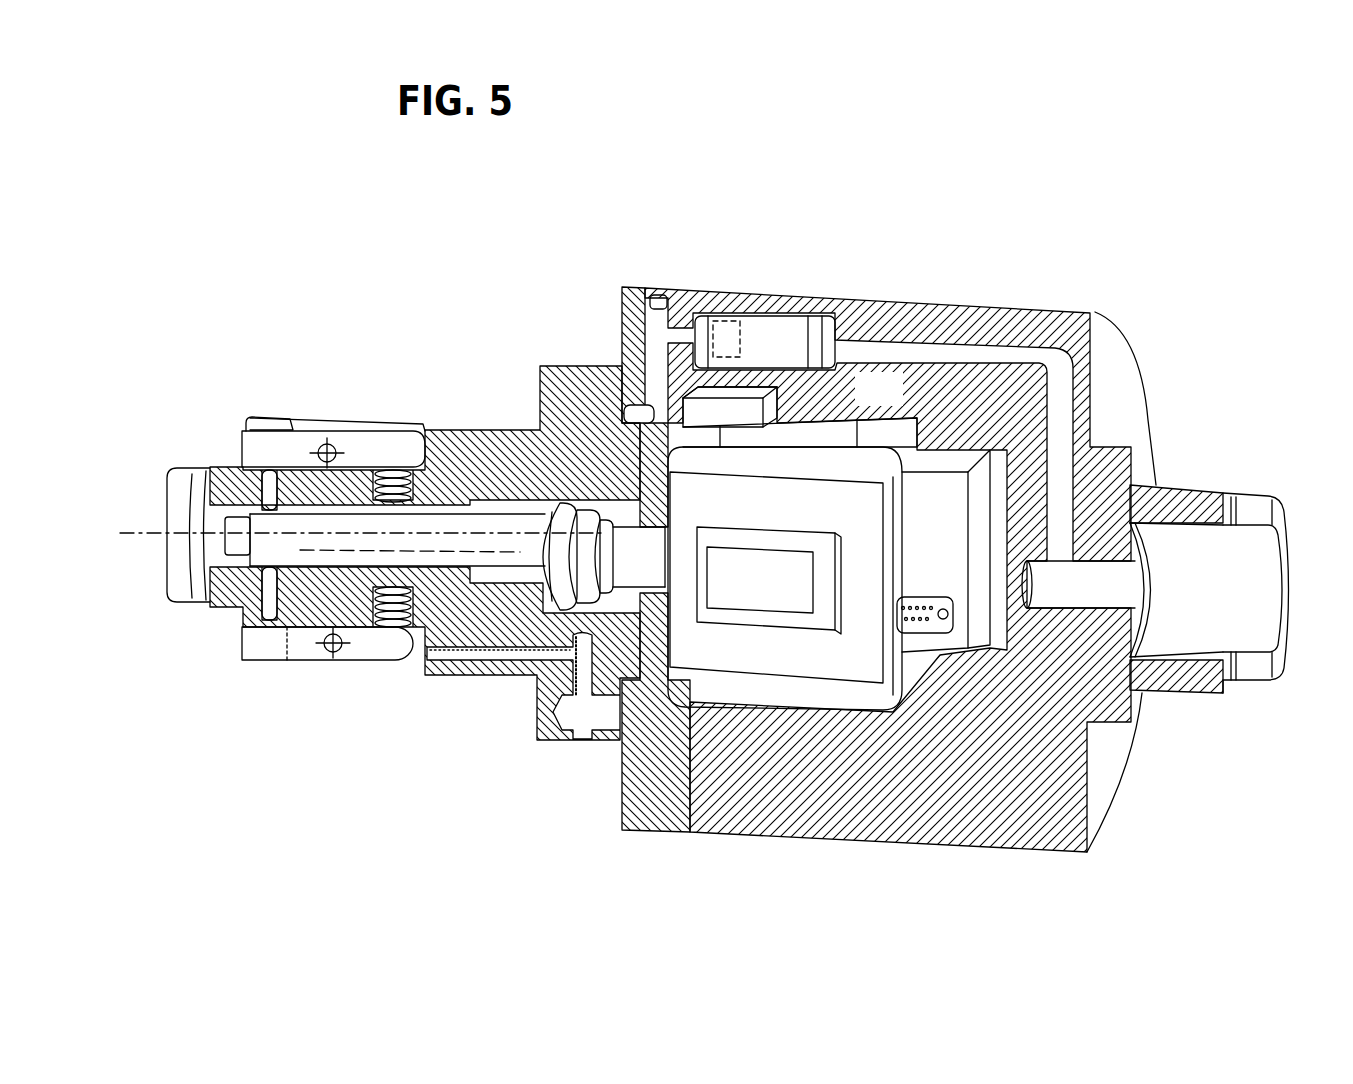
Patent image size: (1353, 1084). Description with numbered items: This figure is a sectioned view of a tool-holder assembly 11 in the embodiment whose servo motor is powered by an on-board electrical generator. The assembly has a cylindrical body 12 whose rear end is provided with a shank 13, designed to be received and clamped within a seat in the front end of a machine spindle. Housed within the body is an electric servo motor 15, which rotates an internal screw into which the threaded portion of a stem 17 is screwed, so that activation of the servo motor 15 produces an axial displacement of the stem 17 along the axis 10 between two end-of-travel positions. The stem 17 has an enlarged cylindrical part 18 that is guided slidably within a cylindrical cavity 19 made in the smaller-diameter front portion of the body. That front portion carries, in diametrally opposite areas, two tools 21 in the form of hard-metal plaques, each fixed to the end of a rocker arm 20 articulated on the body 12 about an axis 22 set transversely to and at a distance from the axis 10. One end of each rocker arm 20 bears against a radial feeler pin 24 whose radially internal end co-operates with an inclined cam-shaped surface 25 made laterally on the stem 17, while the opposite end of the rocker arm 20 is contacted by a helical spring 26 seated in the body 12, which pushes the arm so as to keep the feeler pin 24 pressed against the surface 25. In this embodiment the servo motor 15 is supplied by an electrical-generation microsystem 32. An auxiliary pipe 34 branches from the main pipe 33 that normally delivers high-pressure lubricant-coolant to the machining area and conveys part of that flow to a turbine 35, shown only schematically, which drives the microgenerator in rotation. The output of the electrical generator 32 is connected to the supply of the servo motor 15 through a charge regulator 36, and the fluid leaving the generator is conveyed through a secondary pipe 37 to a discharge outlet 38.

The axis 10 is at (143, 534).
The tool-holder assembly 11 is at (1156, 216).
The cylindrical body 12 is at (1013, 293).
The shank 13 is at (1205, 485).
The electric servo motor 15 is at (946, 658).
The stem 17 is at (366, 663).
The enlarged cylindrical part 18 is at (613, 492).
The cylindrical cavity 19 is at (500, 450).
The rocker arm 20 is at (298, 441).
The tool 21 is at (250, 418).
The axis 22 is at (348, 440).
The radial feeler pin 24 is at (337, 465).
The inclined cam-shaped surface 25 is at (237, 470).
The helical spring 26 is at (457, 445).
The electrical-generation microsystem 32 is at (800, 318).
The main pipe 33 is at (507, 655).
The auxiliary pipe 34 is at (653, 384).
The turbine 35 is at (755, 288).
The charge regulator 36 is at (879, 390).
The secondary pipe 37 is at (978, 352).
The discharge outlet 38 is at (1105, 578).